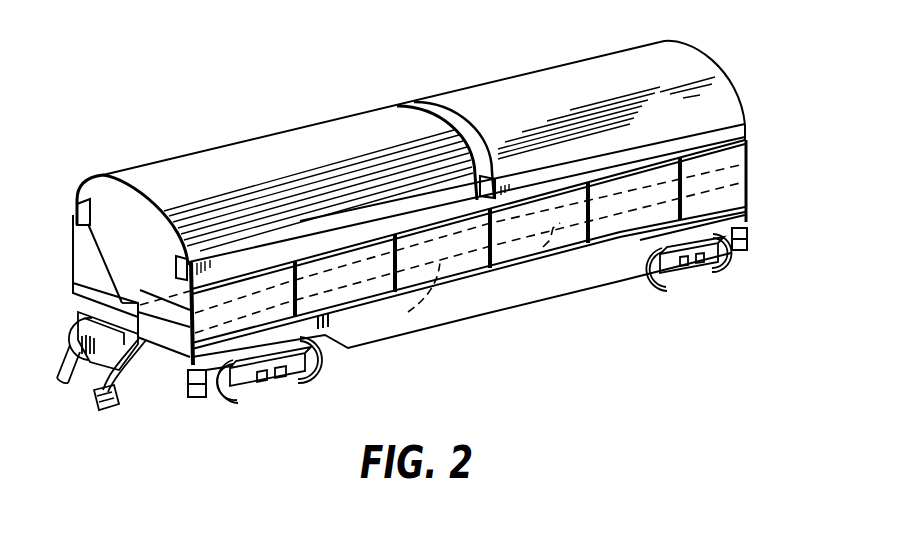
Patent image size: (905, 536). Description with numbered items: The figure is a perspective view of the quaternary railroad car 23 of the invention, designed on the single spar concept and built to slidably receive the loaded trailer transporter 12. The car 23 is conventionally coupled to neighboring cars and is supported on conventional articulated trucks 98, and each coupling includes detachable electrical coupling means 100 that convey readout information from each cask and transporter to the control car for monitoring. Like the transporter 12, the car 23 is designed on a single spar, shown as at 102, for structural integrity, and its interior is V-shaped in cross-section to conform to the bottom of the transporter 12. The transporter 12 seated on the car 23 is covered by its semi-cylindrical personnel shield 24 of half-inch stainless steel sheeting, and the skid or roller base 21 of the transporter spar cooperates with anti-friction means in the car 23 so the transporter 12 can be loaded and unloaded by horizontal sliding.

The trailer transporter 12 is at (246, 134).
The personnel shield 24 is at (352, 196).
The base of spar 21 is at (123, 299).
The railroad car 23 is at (513, 312).
The articulated trucks 98 is at (280, 386).
The detachable electrical coupling means 100 is at (131, 390).
The single spar 102 is at (83, 307).